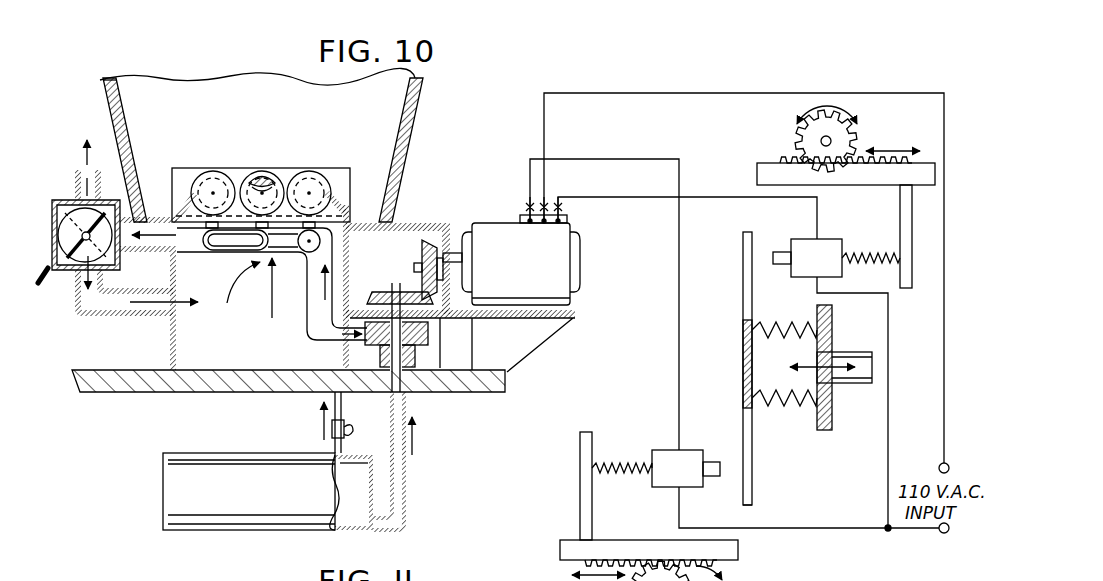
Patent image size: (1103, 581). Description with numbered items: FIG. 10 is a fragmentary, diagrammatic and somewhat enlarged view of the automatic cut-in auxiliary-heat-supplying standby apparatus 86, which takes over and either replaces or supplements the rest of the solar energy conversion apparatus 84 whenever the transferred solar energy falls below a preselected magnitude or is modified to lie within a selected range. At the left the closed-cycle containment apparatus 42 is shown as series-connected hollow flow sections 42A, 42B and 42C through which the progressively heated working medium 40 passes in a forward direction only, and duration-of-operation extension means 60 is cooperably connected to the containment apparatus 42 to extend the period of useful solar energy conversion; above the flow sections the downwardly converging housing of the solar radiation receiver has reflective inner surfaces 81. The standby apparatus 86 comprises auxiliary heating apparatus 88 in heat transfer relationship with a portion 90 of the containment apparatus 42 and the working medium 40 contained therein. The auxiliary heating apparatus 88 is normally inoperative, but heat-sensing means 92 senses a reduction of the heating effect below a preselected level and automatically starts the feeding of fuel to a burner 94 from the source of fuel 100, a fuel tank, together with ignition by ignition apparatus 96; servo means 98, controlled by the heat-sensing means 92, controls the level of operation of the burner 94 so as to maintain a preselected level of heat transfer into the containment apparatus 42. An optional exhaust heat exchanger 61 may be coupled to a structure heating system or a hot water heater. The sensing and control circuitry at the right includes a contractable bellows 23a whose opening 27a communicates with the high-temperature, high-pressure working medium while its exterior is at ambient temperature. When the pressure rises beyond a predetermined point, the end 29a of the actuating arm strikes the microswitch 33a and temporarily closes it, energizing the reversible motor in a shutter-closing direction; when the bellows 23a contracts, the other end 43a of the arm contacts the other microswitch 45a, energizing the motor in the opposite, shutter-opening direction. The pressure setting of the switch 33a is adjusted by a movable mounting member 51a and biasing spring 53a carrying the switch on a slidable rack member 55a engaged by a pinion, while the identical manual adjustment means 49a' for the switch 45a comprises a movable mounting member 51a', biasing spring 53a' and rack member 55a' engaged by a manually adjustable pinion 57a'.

The reflective inner surfaces 81 is at (122, 104).
The solar energy conversion apparatus 84 is at (421, 103).
The duration-of-operation extension means 60 is at (113, 188).
The exhaust heat exchanger 61 is at (124, 210).
The closed-cycle containment apparatus 42 is at (294, 166).
The hollow flow section 42A is at (315, 172).
The hollow flow section 42B is at (274, 174).
The hollow flow section 42C is at (211, 170).
The working medium 40 is at (262, 170).
The ignition apparatus 96 is at (362, 212).
The portion of containment apparatus 90 is at (372, 206).
The auxiliary heating apparatus 88 is at (272, 286).
The burner 94 is at (217, 250).
The auxiliary-heat-supplying standby apparatus 86 is at (536, 138).
The servo means 98 is at (501, 218).
The source of fuel 100 is at (267, 491).
The rack member 55a' is at (815, 164).
The pinion 57a' is at (787, 141).
The manual adjustment means 49a' is at (869, 128).
The movable mounting member 51a' is at (947, 236).
The biasing spring 53a' is at (871, 230).
The microswitch 45a is at (790, 240).
The end of actuating arm 43a is at (743, 236).
The heat-sensing means 92 is at (742, 357).
The bellows 23a is at (782, 402).
The opening 27a is at (872, 370).
The microswitch 33a is at (654, 449).
The movable mounting member 51a is at (551, 486).
The biasing spring 53a is at (622, 497).
The rack member 55a is at (615, 560).
The end of actuating arm 29a is at (752, 514).